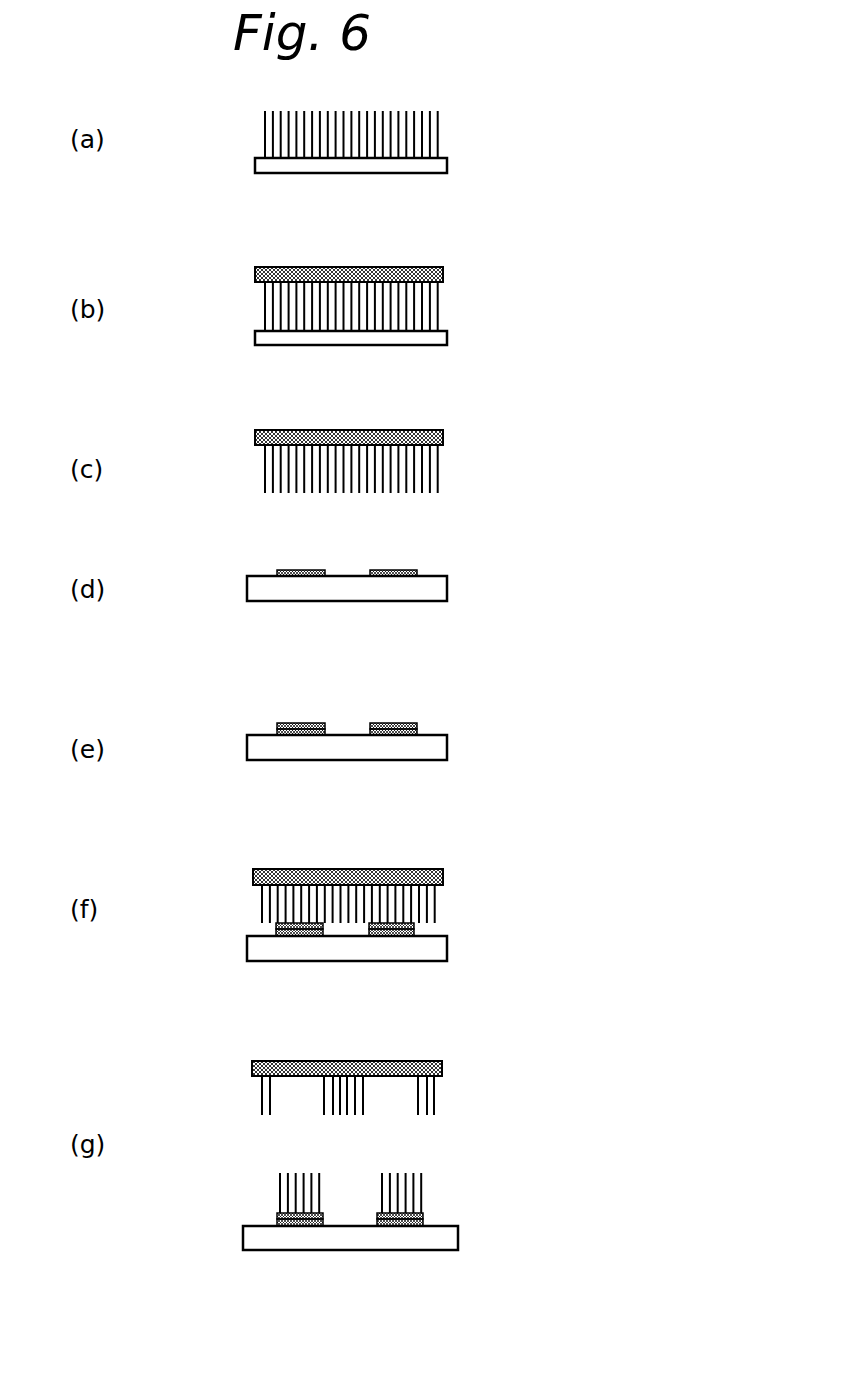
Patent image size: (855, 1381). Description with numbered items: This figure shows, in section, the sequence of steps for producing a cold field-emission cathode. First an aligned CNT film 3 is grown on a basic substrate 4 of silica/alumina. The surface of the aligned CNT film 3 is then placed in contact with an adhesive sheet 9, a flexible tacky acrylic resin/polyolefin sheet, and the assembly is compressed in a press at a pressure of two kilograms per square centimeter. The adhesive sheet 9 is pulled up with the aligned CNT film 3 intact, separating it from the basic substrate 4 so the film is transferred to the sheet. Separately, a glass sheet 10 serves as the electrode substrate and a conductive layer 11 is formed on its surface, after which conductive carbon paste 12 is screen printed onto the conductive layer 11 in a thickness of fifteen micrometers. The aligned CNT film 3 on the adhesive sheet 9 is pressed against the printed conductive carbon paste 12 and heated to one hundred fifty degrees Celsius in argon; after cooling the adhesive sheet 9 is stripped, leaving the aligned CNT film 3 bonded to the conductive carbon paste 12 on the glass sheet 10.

The aligned CNT film 3 is at (250, 112).
The basic substrate 4 is at (423, 168).
The adhesive sheet 9 is at (418, 267).
The glass sheet 10 is at (412, 590).
The conductive layer 11 is at (418, 572).
The conductive carbon paste 12 is at (418, 723).